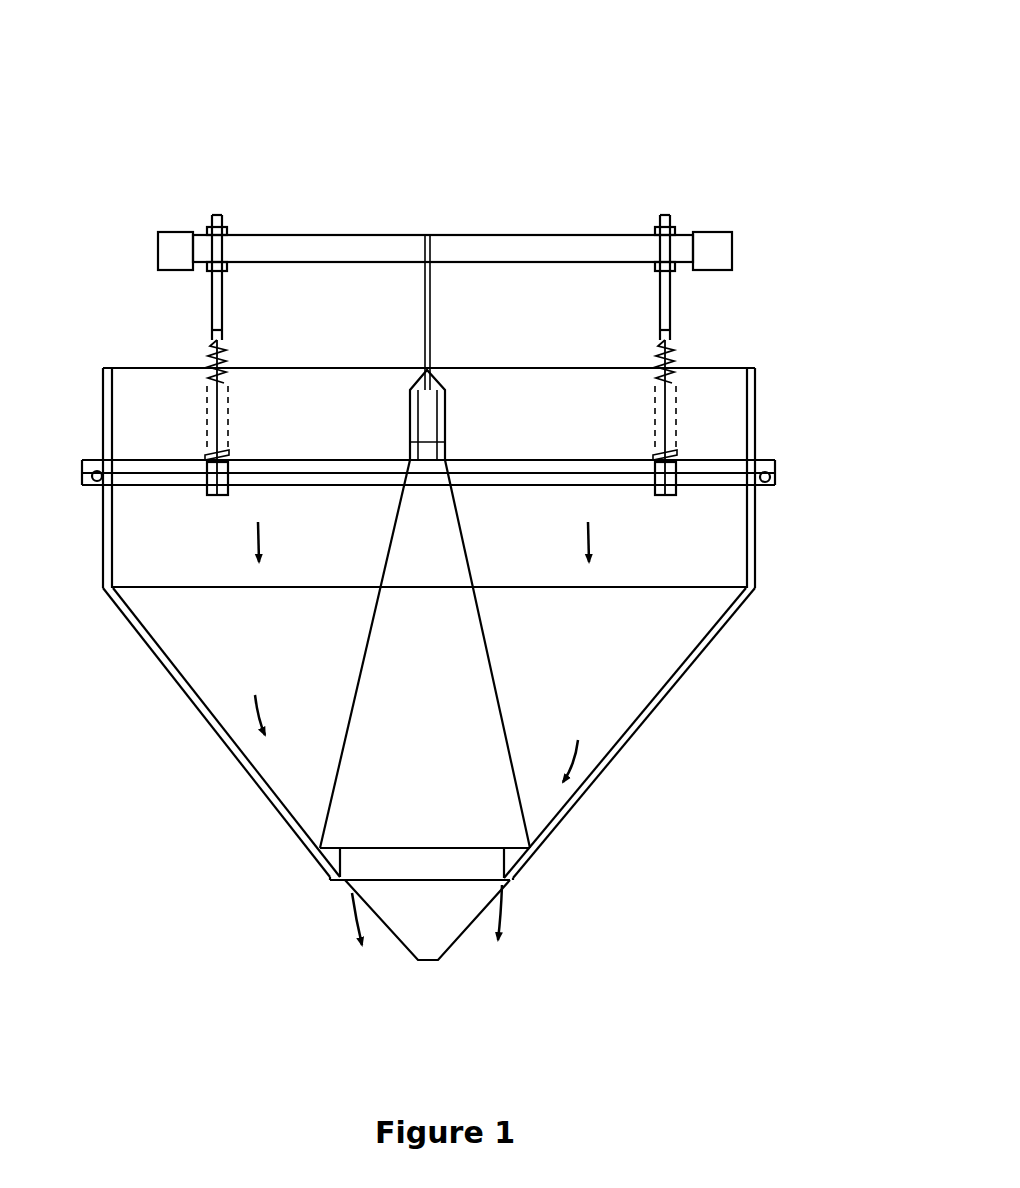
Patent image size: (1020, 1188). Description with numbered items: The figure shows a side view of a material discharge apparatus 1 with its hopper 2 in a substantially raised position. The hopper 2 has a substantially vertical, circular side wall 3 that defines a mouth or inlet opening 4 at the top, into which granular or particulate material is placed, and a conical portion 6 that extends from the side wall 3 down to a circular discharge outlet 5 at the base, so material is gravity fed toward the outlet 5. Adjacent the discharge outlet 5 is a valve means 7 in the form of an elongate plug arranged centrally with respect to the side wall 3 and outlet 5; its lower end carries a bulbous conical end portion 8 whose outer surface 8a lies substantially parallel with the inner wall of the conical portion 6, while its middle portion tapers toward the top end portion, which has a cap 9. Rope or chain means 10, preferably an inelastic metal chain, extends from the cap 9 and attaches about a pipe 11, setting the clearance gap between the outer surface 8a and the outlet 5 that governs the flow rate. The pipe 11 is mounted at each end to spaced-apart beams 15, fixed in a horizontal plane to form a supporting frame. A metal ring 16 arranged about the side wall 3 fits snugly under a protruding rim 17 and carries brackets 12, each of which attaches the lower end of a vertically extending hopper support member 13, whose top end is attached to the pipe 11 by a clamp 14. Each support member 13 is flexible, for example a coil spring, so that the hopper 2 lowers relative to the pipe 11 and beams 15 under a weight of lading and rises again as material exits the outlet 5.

The material discharge apparatus 1 is at (665, 90).
The hopper 2 is at (700, 867).
The side wall 3 is at (752, 436).
The inlet opening 4 is at (728, 365).
The discharge outlet 5 is at (510, 880).
The conical portion 6 is at (620, 748).
The valve means 7 is at (386, 732).
The conical end portion 8 is at (440, 938).
The outer surface 8a is at (330, 870).
The cap 9 is at (440, 393).
The rope or chain means 10 is at (428, 290).
The pipe 11 is at (310, 245).
The bracket 12 is at (675, 486).
The hopper support member 13 is at (675, 348).
The clamp 14 is at (224, 232).
The beam 15 is at (170, 245).
The metal ring 16 is at (770, 466).
The protruding rim 17 is at (762, 480).